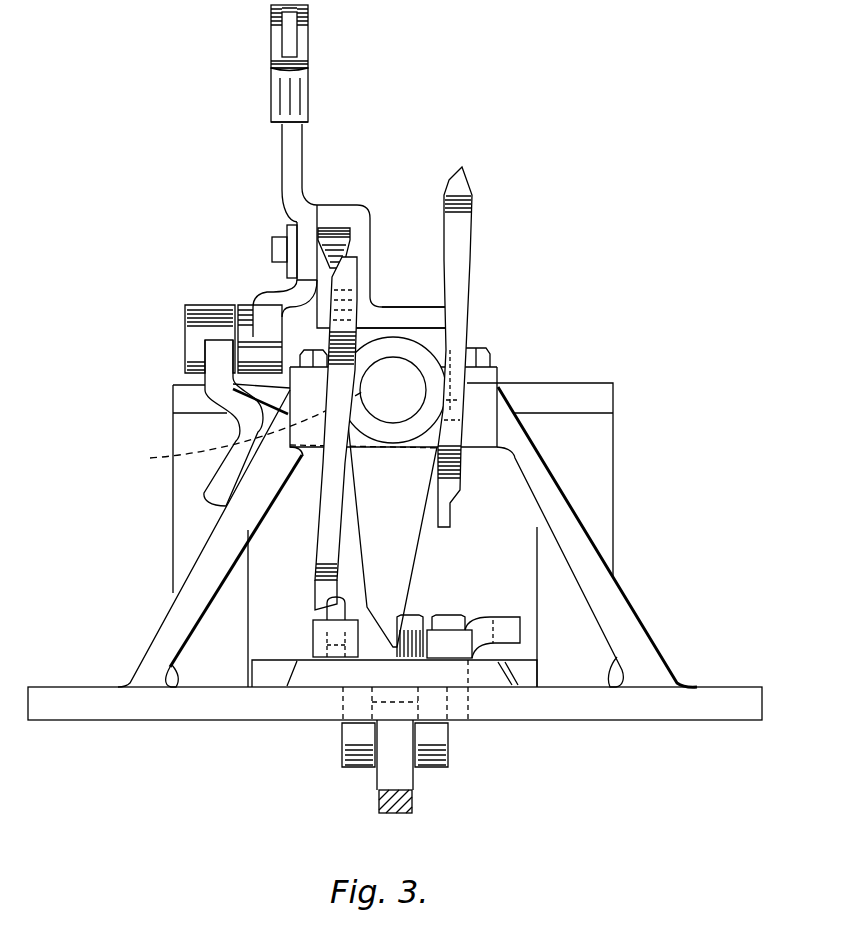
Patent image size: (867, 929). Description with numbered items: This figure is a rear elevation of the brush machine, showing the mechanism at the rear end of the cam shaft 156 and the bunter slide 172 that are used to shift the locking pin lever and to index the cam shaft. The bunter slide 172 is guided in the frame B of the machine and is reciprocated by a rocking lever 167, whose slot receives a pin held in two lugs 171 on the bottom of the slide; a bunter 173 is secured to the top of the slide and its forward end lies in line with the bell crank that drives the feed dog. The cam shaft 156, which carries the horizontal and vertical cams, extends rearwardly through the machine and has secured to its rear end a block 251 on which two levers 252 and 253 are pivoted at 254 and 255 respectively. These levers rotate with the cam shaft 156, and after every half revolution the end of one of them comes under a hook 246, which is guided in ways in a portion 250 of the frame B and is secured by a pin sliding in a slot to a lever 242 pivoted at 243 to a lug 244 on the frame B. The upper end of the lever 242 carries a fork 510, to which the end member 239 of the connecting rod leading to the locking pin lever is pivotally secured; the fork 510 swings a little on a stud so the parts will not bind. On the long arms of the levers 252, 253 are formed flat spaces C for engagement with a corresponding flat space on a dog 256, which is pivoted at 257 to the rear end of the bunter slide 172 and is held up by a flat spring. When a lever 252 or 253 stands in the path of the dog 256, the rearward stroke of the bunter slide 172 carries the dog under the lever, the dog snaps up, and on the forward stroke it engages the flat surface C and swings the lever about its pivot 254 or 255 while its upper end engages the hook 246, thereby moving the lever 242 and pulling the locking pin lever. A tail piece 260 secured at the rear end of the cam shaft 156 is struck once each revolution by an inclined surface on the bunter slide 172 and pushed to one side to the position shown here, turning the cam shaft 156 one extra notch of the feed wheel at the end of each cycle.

The cam shaft 156 is at (391, 388).
The rocking lever 167 is at (377, 803).
The lugs 171 is at (340, 757).
The bunter slide 172 is at (305, 675).
The bunter 173 is at (507, 627).
The end member 239 is at (272, 22).
The lever 242 is at (290, 168).
The pivot 243 is at (237, 333).
The lug 244 is at (190, 348).
The hook 246 is at (340, 240).
The portion of the frame 250 is at (358, 228).
The block 251 is at (427, 340).
The lever 252 is at (460, 260).
The lever 253 is at (327, 515).
The pivot 254 is at (453, 370).
The pivot 255 is at (228, 431).
The dog 256 is at (337, 610).
The pivot 257 is at (313, 627).
The tail piece 260 is at (387, 593).
The fork 510 is at (280, 62).
The frame B is at (650, 708).
The flat spaces C is at (458, 182).